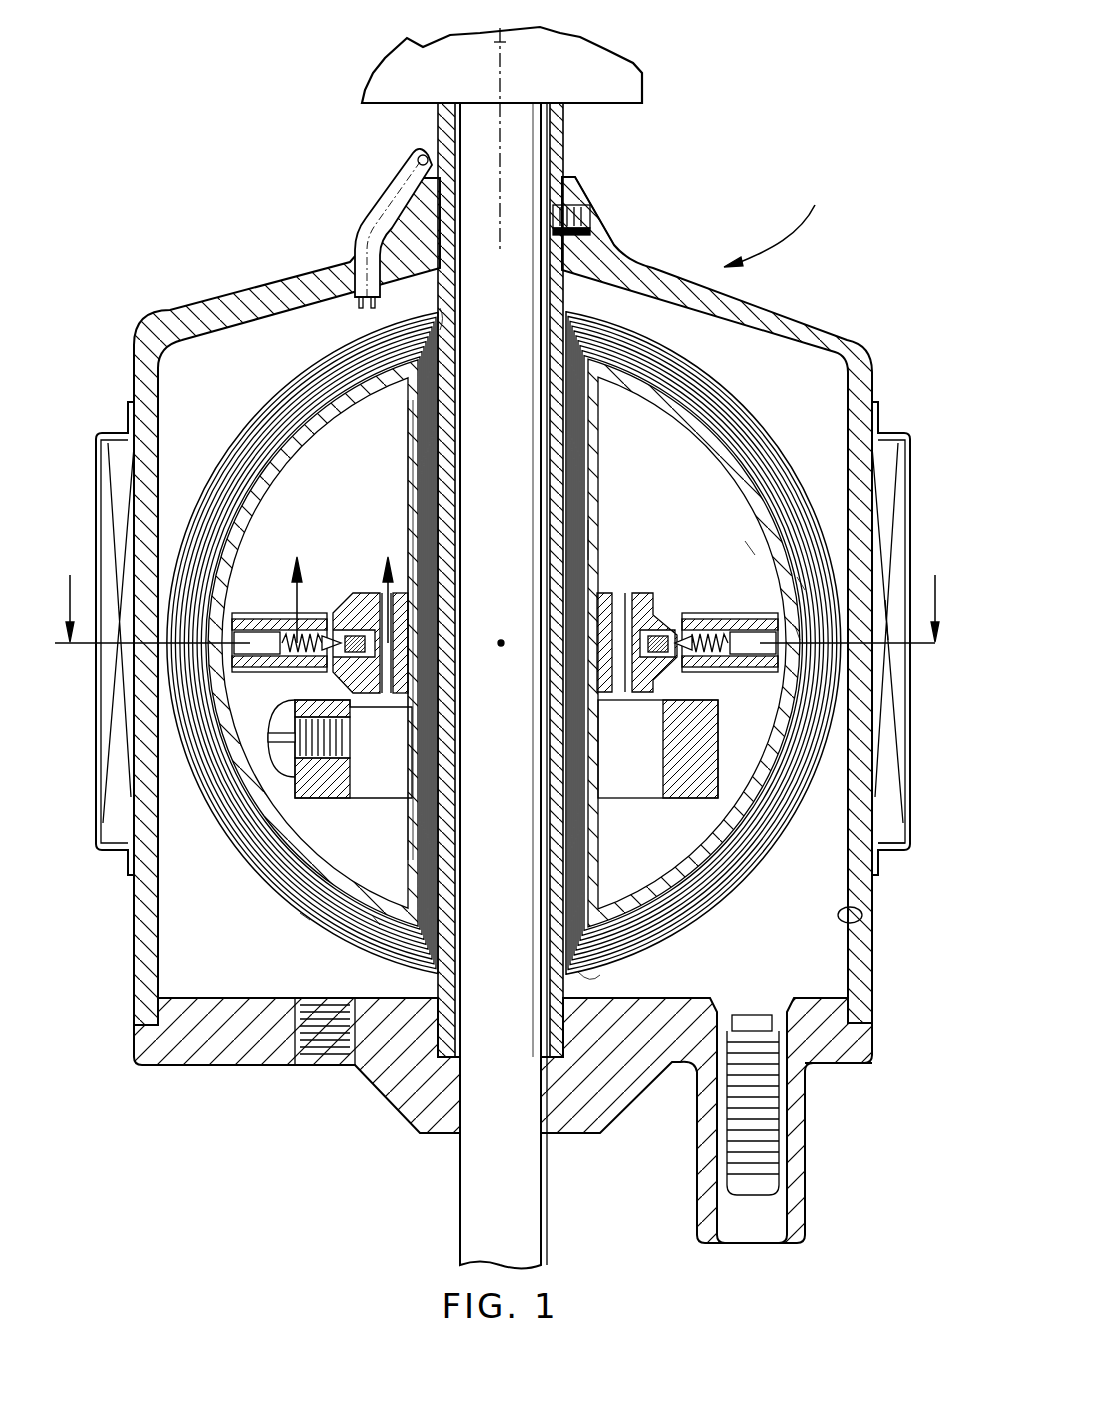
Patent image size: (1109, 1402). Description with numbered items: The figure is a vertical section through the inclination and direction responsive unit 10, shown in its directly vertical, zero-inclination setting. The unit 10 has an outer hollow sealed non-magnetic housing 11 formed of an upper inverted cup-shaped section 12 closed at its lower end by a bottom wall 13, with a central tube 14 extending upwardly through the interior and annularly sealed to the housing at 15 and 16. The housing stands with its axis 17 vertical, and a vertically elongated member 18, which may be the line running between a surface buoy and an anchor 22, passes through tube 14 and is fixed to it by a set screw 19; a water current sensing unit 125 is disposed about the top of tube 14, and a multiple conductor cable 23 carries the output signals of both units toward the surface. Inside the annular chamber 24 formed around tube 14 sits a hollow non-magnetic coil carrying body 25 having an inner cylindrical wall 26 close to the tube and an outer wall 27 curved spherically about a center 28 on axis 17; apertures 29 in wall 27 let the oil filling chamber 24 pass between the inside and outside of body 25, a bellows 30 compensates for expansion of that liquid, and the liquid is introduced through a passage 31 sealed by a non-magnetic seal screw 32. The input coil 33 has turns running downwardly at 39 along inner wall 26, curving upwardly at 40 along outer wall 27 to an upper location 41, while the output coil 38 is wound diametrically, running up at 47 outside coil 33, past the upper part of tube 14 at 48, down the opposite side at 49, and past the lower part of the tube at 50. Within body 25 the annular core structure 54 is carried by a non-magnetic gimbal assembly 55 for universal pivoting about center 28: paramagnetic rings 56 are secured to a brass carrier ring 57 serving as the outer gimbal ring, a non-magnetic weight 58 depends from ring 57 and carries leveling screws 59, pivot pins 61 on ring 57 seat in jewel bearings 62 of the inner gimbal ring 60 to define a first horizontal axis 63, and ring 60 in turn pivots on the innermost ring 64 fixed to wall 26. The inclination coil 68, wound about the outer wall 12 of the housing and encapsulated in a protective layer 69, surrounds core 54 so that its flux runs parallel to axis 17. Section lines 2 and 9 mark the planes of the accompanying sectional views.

The inclination and direction responsive unit 10 is at (775, 221).
The housing 11 is at (875, 500).
The upper inverted cup shaped section 12 is at (873, 365).
The bottom wall 13 is at (830, 1067).
The central tube 14 is at (553, 167).
The annular seal 15 is at (563, 195).
The annular seal 16 is at (455, 1072).
The axis 17 is at (500, 84).
The vertically elongated member 18 is at (530, 147).
The set screw 19 is at (587, 213).
The anchor 22 is at (553, 487).
The multiple conductor cable 23 is at (392, 178).
The annular chamber 24 is at (862, 915).
The coil carrying body 25 is at (797, 577).
The inner vertical cylindrical wall 26 is at (592, 535).
The outer annular wall 27 is at (795, 626).
The center 28 is at (501, 641).
The apertures 29 is at (745, 541).
The bellows 30 is at (755, 1192).
The passage 31 is at (311, 998).
The seal screw 32 is at (316, 1037).
The input coil 33 is at (240, 825).
The output coil 38 is at (278, 392).
The downward turn portion 39 is at (428, 463).
The upward curving turn portion 40 is at (372, 915).
The upper location 41 is at (375, 367).
The upward arcuate portion 47 is at (300, 913).
The upper tube crossing 48 is at (440, 308).
The downward arcuate portion 49 is at (725, 392).
The lower tube crossing 50 is at (578, 972).
The annular core structure 54 is at (265, 614).
The gimbal assembly 55 is at (634, 586).
The annular rings 56 is at (717, 612).
The carrier ring 57 is at (262, 657).
The annular weight 58 is at (692, 798).
The adjusting screws 59 is at (272, 782).
The inner gimbal ring 60 is at (377, 590).
The pivot pins 61 is at (302, 618).
The jewel bearings 62 is at (650, 692).
The first horizontal axis 63 is at (899, 660).
The third gimbal ring 64 is at (397, 695).
The inclination coil 68 is at (888, 747).
The protective material layer 69 is at (908, 825).
The water current sensing unit 125 is at (633, 82).
The section line 2- 2 is at (500, 631).
The view line 9- 9 is at (337, 586).